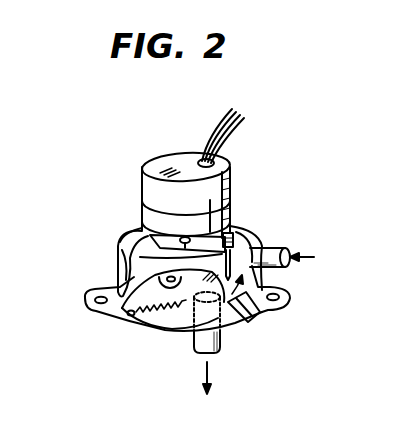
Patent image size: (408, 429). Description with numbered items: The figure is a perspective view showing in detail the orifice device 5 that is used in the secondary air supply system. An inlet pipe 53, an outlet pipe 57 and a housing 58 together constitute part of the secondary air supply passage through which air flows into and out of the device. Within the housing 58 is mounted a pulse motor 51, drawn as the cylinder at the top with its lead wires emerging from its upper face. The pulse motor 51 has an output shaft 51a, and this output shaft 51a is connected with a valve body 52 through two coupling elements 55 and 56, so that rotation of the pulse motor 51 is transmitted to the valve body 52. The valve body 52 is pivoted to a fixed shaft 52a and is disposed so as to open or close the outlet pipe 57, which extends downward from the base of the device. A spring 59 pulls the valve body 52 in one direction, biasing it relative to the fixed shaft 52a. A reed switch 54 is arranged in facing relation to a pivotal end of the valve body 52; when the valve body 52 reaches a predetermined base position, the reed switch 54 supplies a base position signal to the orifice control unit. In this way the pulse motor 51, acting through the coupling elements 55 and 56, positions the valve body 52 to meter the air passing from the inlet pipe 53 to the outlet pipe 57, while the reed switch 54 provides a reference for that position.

The orifice device 5 is at (120, 181).
The pulse motor 51 is at (232, 205).
The output shaft 51a is at (138, 232).
The valve body 52 is at (122, 304).
The fixed shaft 52a is at (158, 281).
The inlet pipe 53 is at (276, 242).
The reed switch 54 is at (262, 318).
The coupling element 55 is at (120, 258).
The coupling element 56 is at (260, 247).
The outlet pipe 57 is at (216, 340).
The housing 58 is at (236, 236).
The spring 59 is at (162, 320).